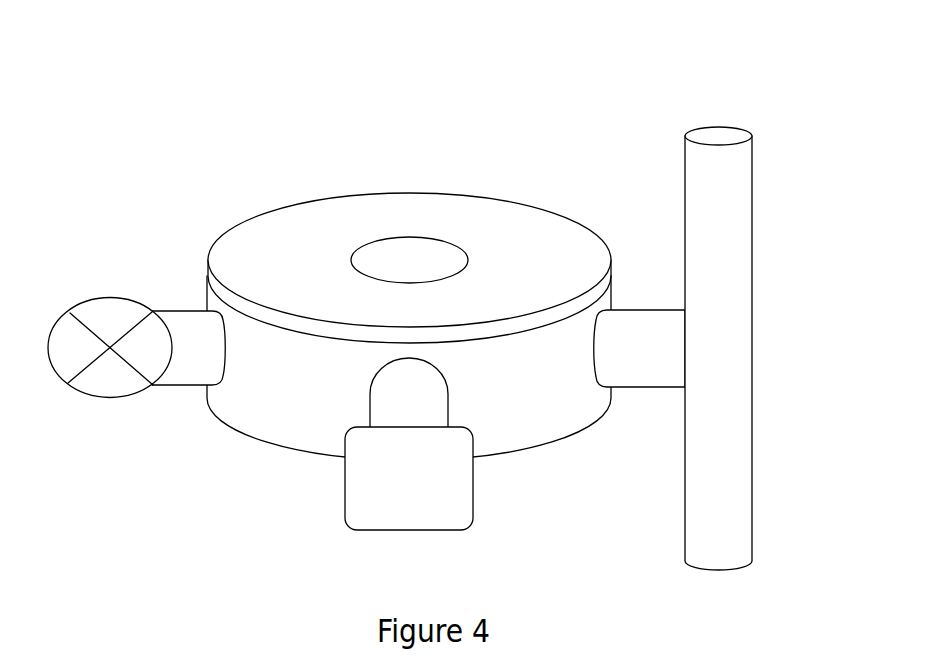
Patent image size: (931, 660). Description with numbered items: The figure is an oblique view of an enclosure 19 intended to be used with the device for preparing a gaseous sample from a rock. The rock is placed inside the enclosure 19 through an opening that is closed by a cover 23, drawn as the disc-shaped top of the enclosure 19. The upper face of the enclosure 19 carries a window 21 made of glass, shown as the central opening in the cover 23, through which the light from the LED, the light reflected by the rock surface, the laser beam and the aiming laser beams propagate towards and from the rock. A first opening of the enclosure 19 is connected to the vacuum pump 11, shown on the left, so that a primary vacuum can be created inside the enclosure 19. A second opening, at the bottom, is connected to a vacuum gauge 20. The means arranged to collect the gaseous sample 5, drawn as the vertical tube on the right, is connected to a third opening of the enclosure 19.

The enclosure 19 is at (145, 155).
The vacuum gauge 20 is at (380, 500).
The cover 23 is at (230, 298).
The window 21 is at (390, 255).
The vacuum pump 11 is at (83, 345).
The means arranged to collect a gaseous sample 5 is at (733, 287).